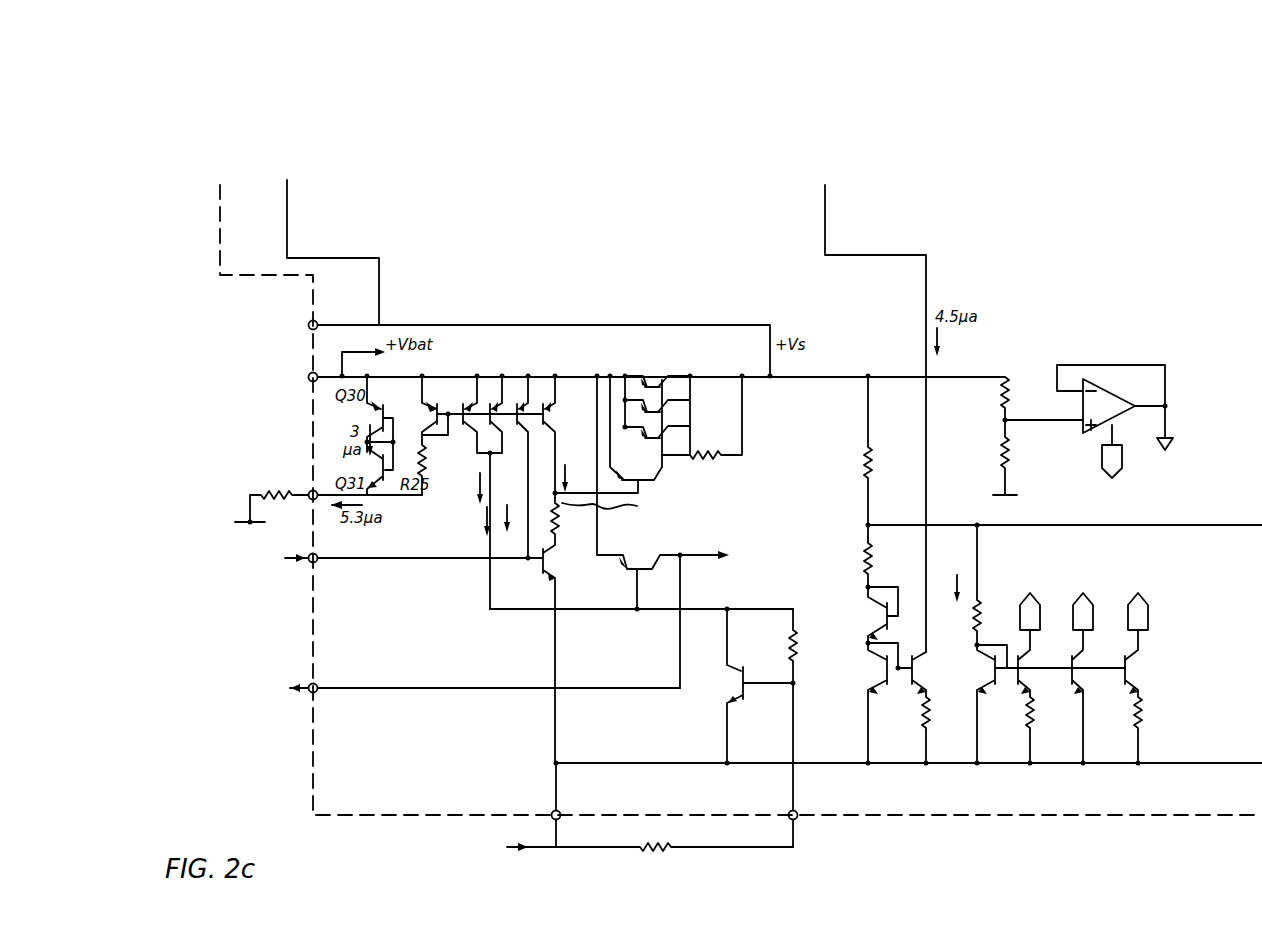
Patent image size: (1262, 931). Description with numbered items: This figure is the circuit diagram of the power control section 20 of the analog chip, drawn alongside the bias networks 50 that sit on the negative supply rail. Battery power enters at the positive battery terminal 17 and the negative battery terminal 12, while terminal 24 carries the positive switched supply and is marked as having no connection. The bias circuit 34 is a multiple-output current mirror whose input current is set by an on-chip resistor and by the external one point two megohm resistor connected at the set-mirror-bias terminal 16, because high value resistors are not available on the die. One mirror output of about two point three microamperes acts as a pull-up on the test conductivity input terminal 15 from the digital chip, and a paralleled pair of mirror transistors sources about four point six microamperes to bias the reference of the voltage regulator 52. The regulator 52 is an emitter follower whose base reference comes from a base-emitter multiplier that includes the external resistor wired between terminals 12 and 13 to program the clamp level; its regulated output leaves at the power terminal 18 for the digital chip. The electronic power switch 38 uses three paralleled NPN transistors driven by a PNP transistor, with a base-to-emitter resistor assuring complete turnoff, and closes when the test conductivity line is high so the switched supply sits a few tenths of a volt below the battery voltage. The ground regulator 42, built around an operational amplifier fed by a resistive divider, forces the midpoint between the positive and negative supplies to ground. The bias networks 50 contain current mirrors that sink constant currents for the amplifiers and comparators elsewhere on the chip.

The -Vs from battery terminal 12 is at (621, 826).
The R102 terminal 13 is at (806, 765).
The test conductivity input terminal 15 is at (244, 587).
The set mirror bias terminal 16 is at (259, 500).
The +Vbat from battery terminal 17 is at (235, 387).
The +VR power to digital ASIC terminal 18 is at (262, 715).
The power control 20 is at (569, 790).
The +Vs terminal (no connection) 24 is at (265, 331).
The bias circuit 34 is at (467, 355).
The electronic power switch 38 is at (755, 419).
The ground regulator 42 is at (1168, 353).
The bias networks 50 is at (1005, 588).
The low drain voltage regulator 52 is at (557, 570).